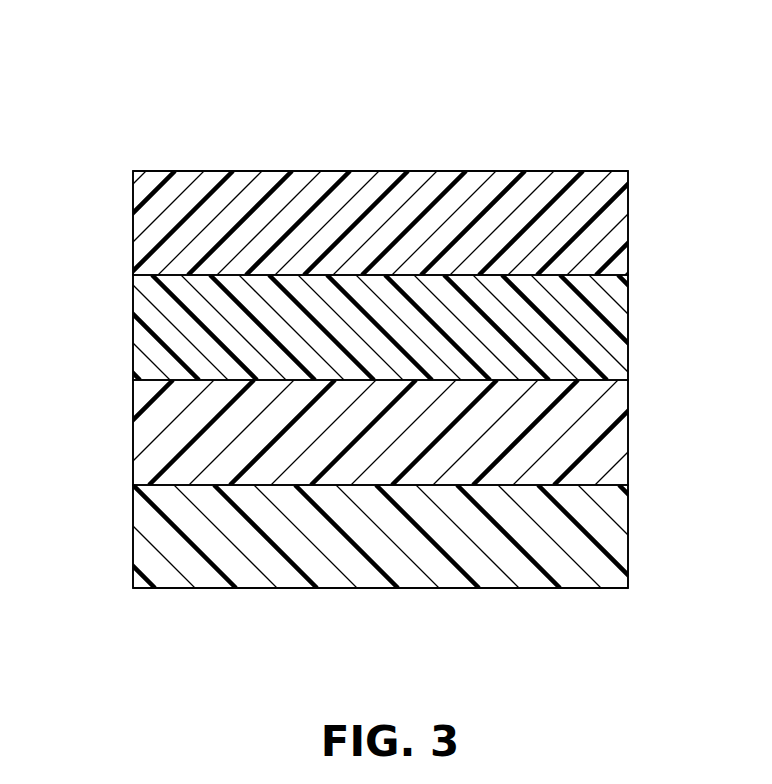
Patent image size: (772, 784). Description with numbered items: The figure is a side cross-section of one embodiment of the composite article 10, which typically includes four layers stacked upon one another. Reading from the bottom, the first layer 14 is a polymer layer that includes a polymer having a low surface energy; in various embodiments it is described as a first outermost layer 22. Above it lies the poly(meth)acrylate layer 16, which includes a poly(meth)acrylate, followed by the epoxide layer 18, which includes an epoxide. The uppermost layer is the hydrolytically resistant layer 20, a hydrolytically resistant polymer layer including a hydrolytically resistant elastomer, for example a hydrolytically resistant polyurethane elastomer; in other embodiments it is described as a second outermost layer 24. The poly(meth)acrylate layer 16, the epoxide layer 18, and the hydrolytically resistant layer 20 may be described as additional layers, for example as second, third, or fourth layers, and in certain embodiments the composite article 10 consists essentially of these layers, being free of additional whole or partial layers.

The composite article 10 is at (84, 101).
The first layer 14 is at (613, 535).
The poly(meth)acrylate layer 16 is at (620, 440).
The epoxide layer 18 is at (618, 320).
The hydrolytically resistant layer 20 is at (618, 213).
The first outermost layer 22 is at (182, 590).
The second outermost layer 24 is at (190, 171).